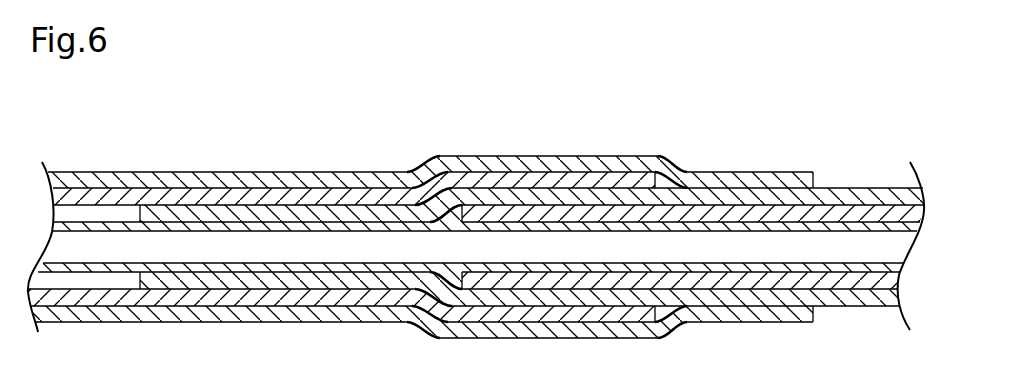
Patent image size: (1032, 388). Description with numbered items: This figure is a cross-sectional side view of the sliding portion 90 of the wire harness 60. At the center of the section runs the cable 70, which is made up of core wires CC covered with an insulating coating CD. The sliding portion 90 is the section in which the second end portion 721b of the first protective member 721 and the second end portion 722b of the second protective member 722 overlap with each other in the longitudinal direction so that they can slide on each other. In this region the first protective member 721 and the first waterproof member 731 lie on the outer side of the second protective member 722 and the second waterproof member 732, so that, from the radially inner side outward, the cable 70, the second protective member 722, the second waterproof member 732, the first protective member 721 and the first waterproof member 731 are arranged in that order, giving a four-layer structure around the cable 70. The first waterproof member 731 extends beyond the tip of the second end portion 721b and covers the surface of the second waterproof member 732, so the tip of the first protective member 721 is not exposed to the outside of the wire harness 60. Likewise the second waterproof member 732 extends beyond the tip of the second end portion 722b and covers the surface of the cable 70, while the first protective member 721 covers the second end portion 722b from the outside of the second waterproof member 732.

The wire harness 60 is at (867, 90).
The cable 70 is at (138, 125).
The sliding portion 90 is at (525, 105).
The first protective member 721 is at (167, 195).
The second end portion of the first protective member 721b is at (622, 183).
The second protective member 722 is at (732, 212).
The second end portion of the second protective member 722b is at (477, 215).
The first waterproof member 731 is at (258, 183).
The second waterproof member 732 is at (842, 195).
The core wires CC is at (87, 247).
The insulating coating CD is at (110, 226).